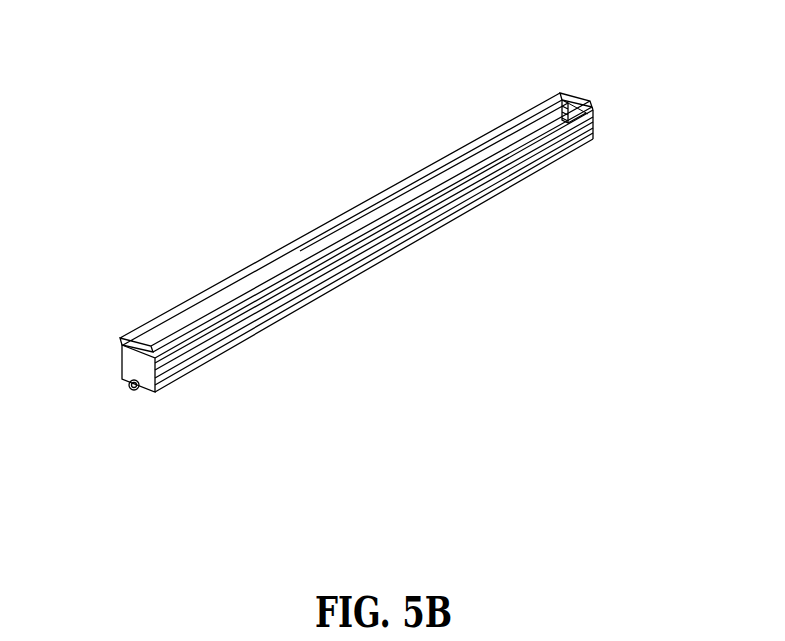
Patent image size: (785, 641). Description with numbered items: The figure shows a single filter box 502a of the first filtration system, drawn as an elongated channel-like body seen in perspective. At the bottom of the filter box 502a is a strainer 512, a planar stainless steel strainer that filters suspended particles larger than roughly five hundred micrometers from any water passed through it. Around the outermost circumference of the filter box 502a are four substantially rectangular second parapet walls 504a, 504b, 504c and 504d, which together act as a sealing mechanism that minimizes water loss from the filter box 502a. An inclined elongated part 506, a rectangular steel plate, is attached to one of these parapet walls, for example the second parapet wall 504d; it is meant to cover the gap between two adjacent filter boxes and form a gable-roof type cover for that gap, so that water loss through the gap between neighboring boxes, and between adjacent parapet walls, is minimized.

The filter box 502a is at (654, 442).
The second parapet wall 504a is at (576, 103).
The second parapet wall 504b is at (398, 230).
The second parapet wall 504c is at (138, 358).
The second parapet wall 504d is at (474, 160).
The inclined elongated part 506 is at (365, 200).
The strainer 512 is at (551, 123).